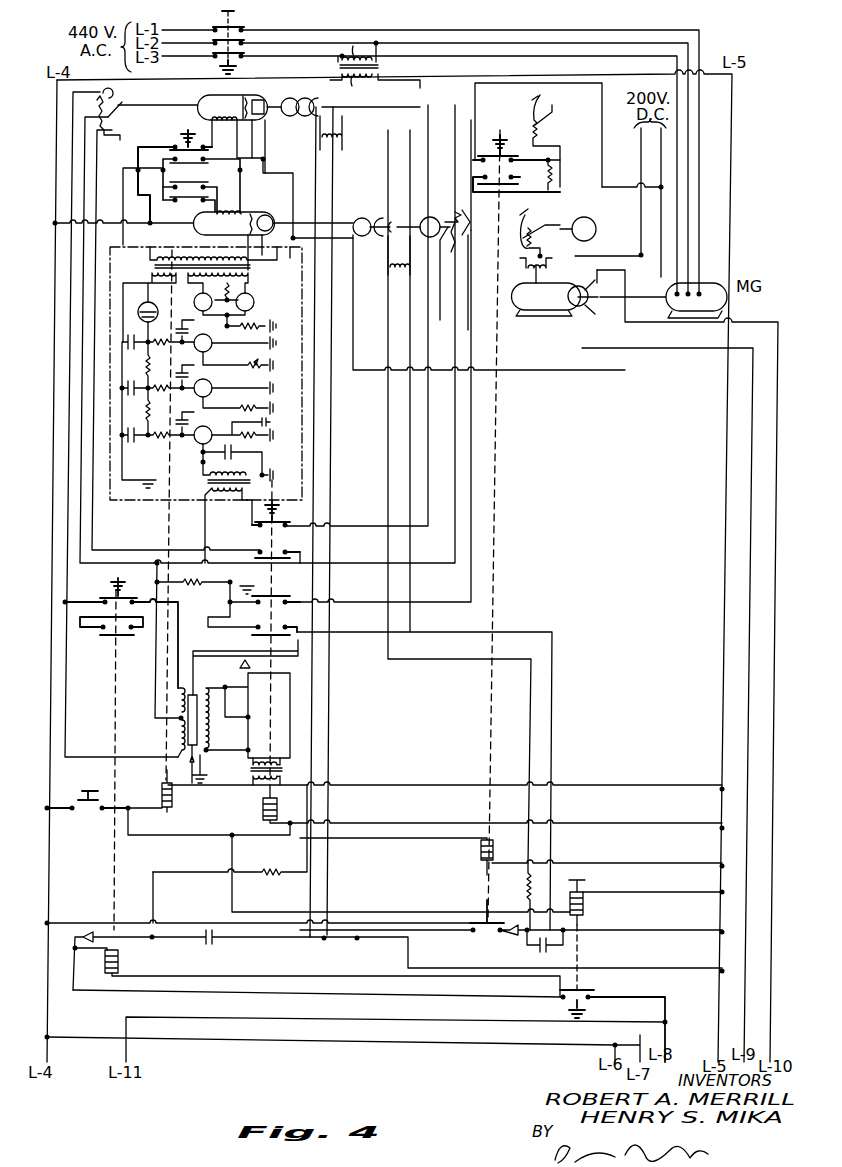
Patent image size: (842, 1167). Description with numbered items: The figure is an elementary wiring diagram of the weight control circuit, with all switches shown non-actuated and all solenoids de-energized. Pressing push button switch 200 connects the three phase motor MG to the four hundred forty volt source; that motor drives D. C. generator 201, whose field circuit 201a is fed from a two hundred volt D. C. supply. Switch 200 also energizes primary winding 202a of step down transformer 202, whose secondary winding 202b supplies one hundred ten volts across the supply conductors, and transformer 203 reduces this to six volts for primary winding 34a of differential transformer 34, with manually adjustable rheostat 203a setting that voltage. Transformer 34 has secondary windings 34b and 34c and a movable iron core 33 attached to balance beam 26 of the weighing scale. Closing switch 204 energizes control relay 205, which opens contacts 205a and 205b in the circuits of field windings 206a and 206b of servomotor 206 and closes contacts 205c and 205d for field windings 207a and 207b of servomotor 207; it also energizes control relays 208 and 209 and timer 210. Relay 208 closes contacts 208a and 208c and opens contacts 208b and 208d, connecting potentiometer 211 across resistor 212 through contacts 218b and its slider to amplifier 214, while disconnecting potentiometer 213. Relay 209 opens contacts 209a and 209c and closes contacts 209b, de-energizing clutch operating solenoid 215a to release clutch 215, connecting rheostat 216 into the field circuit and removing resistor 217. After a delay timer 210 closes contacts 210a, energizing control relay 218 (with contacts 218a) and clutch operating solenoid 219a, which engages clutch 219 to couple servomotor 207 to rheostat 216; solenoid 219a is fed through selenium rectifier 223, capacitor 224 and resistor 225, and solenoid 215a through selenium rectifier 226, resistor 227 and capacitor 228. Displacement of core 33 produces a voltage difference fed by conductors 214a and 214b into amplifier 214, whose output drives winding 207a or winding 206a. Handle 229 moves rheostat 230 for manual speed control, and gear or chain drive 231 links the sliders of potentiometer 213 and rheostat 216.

The balance beam 26 is at (232, 645).
The movable iron core 33 is at (208, 685).
The differential transformer 34 is at (172, 790).
The primary winding 34a is at (212, 720).
The secondary winding 34b is at (175, 703).
The secondary winding 34c is at (175, 740).
The push button switch 200 is at (246, 58).
The D. C. generator 201 is at (545, 305).
The field circuit 201a is at (553, 267).
The step down transformer 202 is at (380, 74).
The primary winding 202a is at (354, 48).
The secondary winding 202b is at (362, 80).
The transformer 203 is at (290, 762).
The manually adjustable rheostat 203a is at (246, 684).
The switch 204 is at (88, 818).
The control relay 205 is at (168, 814).
The normally closed contacts 205a is at (180, 206).
The normally closed contacts 205b is at (204, 178).
The normally open contacts 205c is at (172, 160).
The normally open contacts 205d is at (173, 148).
The servomotor 206 is at (190, 228).
The field winding 206a is at (228, 192).
The field winding 206b is at (250, 232).
The servomotor 207 is at (224, 98).
The field winding 207a is at (210, 118).
The field winding 207b is at (254, 98).
The control relay 208 is at (262, 818).
The normally open contacts 208a is at (300, 625).
The normally closed contacts 208b is at (300, 590).
The normally open contact 208c is at (300, 555).
The normally closed contacts 208d is at (300, 522).
The control relay 209 is at (482, 827).
The normally closed contacts 209a is at (478, 918).
The normally open contacts 209b is at (493, 185).
The normally closed contacts 209c is at (480, 152).
The timer 210 is at (584, 905).
The normally open contacts 210a is at (590, 990).
The potentiometer 211 is at (122, 113).
The resistor 212 is at (216, 568).
The potentiometer 213 is at (466, 205).
The amplifier 214 is at (140, 504).
The conductor 214a is at (214, 533).
The conductor 214b is at (258, 512).
The clutch 215 is at (378, 208).
The clutch operating solenoid 215a is at (404, 258).
The rheostat 216 is at (548, 100).
The resistor 217 is at (552, 170).
The control relay 218 is at (122, 960).
The contacts 218a is at (116, 637).
The normally closed contacts 218b is at (102, 600).
The clutch 219 is at (312, 100).
The clutch operating solenoid 219a is at (322, 128).
The selenium rectifier 223 is at (103, 930).
The capacitor 224 is at (215, 948).
The resistor 225 is at (262, 869).
The selenium rectifier 226 is at (520, 950).
The resistor 227 is at (520, 888).
The capacitor 228 is at (543, 960).
The handle 229 is at (590, 218).
The rheostat 230 is at (533, 220).
The gear or chain drive 231 is at (452, 156).